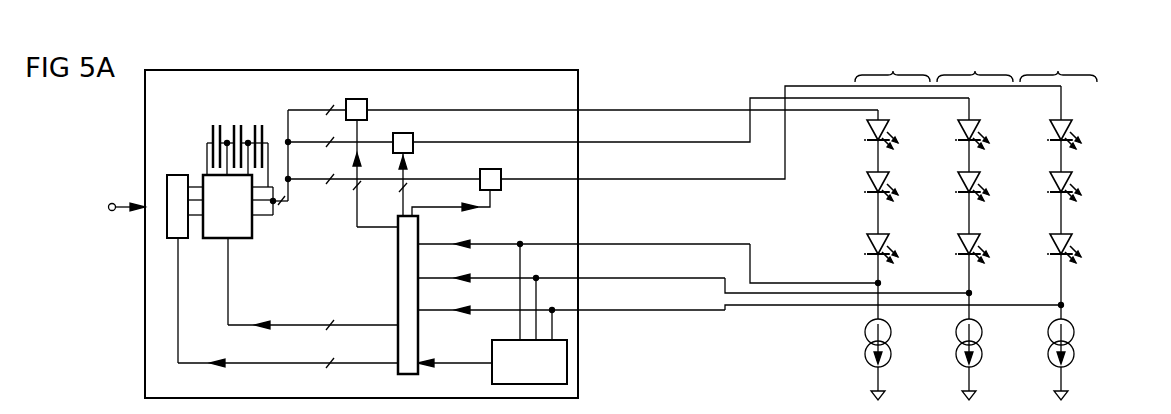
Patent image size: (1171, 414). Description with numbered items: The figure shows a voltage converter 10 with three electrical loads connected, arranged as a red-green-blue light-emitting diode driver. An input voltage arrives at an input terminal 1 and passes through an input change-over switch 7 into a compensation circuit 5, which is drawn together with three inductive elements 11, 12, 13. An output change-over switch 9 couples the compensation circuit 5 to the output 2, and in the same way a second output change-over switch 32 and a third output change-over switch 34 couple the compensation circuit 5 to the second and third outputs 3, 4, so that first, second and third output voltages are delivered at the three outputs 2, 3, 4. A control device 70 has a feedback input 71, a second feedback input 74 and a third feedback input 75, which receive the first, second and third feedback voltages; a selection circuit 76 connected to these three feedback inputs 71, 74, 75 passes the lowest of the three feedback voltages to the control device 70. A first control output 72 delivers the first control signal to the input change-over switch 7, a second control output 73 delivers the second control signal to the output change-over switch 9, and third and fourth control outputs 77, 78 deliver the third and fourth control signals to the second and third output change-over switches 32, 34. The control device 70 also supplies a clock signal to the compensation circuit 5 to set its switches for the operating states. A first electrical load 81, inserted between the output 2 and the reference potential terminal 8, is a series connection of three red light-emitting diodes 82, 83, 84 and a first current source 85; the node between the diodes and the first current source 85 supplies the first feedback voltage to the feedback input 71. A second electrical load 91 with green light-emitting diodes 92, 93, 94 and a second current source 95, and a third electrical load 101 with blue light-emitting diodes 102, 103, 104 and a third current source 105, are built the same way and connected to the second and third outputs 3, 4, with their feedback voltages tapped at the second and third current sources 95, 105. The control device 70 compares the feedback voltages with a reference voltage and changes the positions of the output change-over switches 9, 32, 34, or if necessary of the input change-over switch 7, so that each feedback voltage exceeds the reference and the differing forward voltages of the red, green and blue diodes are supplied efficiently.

The input voltage terminal VIN 1 is at (113, 200).
The output 2 is at (580, 110).
The second output 3 is at (580, 143).
The third output 4 is at (580, 179).
The compensation circuit 5 is at (218, 240).
The input change-over switch 7 is at (178, 175).
The reference potential terminal 8 is at (966, 394).
The output change-over switch 9 is at (367, 102).
The voltage converter 10 is at (145, 310).
The first inductor 11 is at (213, 124).
The second inductor 12 is at (237, 124).
The third inductor 13 is at (258, 124).
The second output change-over switch 32 is at (413, 137).
The third output change-over switch 34 is at (501, 185).
The control device 70 is at (398, 290).
The feedback input 71 is at (418, 245).
The first control output 72 is at (398, 366).
The second control output 73 is at (398, 230).
The second feedback input 74 is at (418, 279).
The third feedback input 75 is at (418, 311).
The selection circuit 76 is at (492, 372).
The third control output 77 is at (398, 213).
The fourth control output 78 is at (413, 207).
The first electrical load 81 is at (896, 219).
The light-emitting diode 82 is at (890, 128).
The light-emitting diode 83 is at (890, 180).
The light-emitting diode 84 is at (890, 242).
The first current source 85 is at (891, 358).
The second electrical load 91 is at (982, 219).
The light-emitting diode 92 is at (981, 128).
The light-emitting diode 93 is at (981, 180).
The light-emitting diode 94 is at (981, 242).
The second current source 95 is at (982, 358).
The third electrical load 101 is at (1075, 219).
The light-emitting diode 102 is at (1073, 128).
The light-emitting diode 103 is at (1073, 180).
The light-emitting diode 104 is at (1073, 242).
The third current source 105 is at (1074, 358).